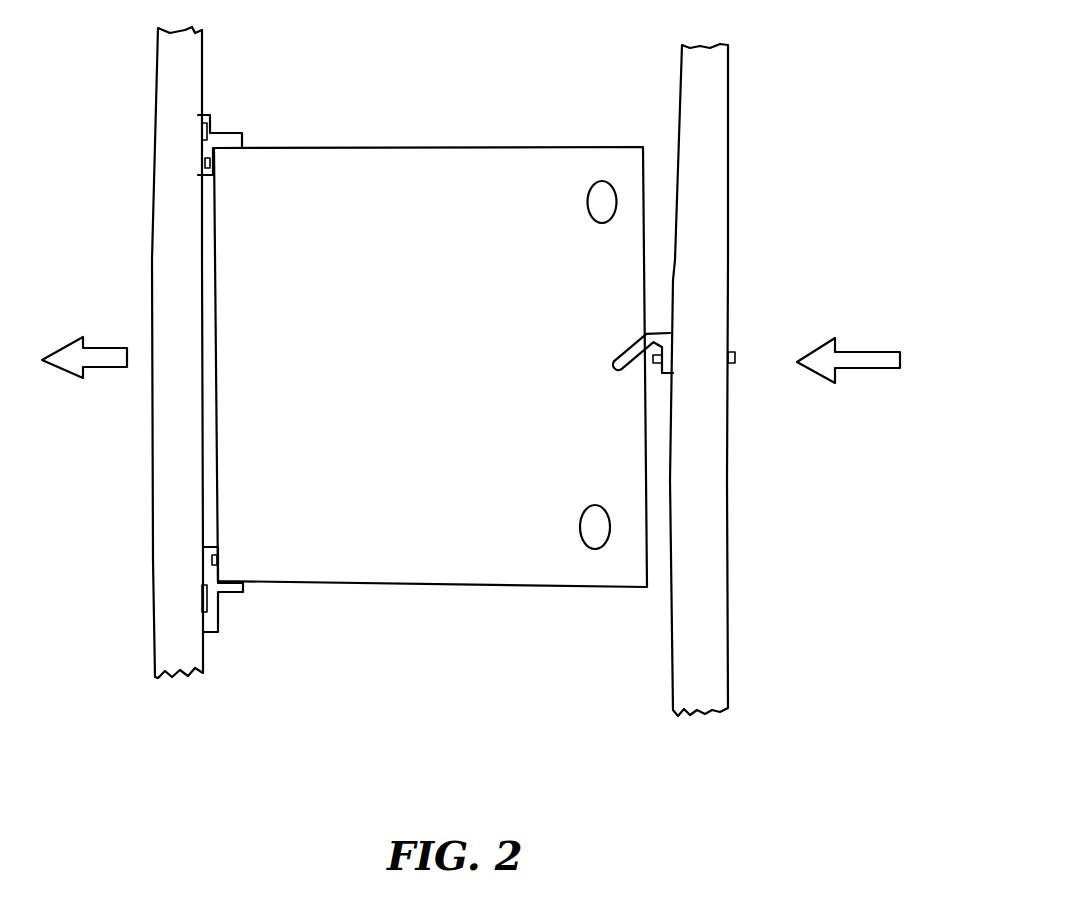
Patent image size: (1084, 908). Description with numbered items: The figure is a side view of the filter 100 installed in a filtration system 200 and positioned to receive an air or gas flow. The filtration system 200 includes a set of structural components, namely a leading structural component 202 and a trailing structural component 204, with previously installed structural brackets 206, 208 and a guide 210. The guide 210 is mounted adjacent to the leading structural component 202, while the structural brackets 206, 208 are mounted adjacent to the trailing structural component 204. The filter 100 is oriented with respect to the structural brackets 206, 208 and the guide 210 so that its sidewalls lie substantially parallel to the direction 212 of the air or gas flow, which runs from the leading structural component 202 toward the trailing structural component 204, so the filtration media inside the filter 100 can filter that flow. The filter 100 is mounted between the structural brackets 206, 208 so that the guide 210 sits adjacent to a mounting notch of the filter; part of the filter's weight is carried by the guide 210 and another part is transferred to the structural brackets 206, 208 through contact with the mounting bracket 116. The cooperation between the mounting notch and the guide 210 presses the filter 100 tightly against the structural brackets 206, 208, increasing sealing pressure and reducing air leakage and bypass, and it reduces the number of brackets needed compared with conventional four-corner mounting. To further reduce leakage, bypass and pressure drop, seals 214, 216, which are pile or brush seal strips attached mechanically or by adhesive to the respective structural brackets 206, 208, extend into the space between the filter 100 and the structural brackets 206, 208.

The filter 100 is at (354, 356).
The mounting bracket 116 is at (283, 147).
The filtration system 200 is at (790, 23).
The leading structural component 202 is at (717, 688).
The trailing structural component 204 is at (185, 657).
The structural bracket 206 is at (240, 120).
The structural bracket 208 is at (255, 637).
The guide 210 is at (667, 343).
The direction of the air or gas flow 212 is at (92, 355).
The seal 214 is at (218, 167).
The seal 216 is at (220, 553).